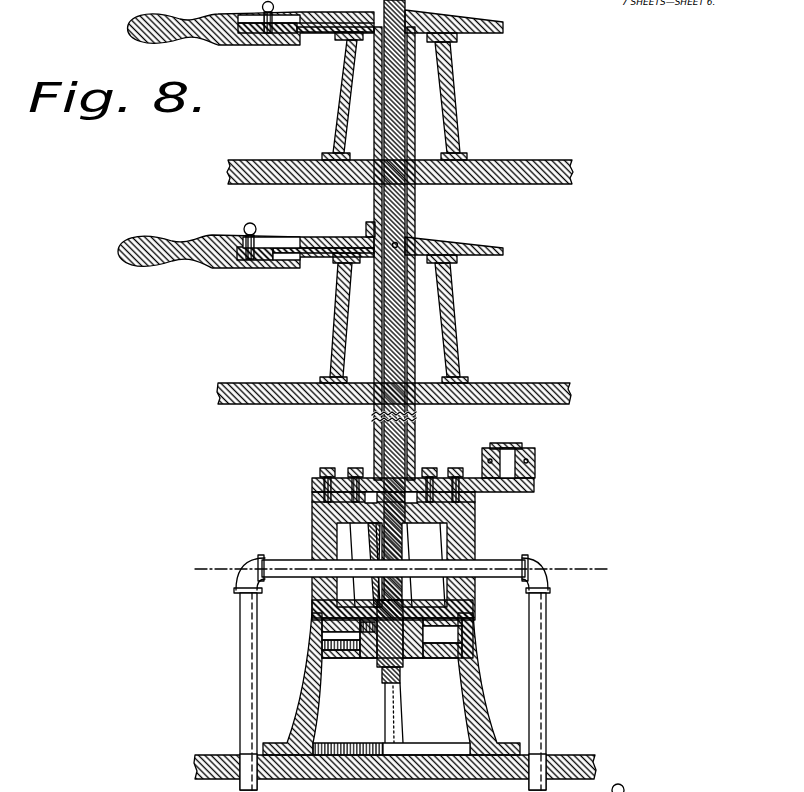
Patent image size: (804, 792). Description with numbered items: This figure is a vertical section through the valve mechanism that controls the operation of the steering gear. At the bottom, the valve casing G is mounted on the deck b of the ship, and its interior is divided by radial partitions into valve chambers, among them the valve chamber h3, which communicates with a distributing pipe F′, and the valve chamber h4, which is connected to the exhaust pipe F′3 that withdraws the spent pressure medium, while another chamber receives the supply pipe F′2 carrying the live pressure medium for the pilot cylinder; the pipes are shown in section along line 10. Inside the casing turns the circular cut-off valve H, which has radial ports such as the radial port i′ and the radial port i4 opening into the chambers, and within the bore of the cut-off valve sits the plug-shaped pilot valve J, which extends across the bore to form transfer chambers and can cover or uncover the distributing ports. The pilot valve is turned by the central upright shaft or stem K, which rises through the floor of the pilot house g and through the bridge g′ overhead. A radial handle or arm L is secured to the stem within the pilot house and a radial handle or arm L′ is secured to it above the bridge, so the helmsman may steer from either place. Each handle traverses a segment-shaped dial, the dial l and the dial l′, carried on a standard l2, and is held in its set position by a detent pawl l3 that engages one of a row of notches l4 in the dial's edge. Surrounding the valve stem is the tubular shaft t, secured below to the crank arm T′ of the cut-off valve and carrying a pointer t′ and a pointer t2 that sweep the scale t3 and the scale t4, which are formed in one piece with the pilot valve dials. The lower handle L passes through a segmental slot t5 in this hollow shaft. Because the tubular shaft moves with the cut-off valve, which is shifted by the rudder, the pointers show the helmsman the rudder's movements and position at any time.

The radial handle or arm L′ is at (143, 42).
The radial handle or arm L is at (138, 240).
The dial l is at (305, 258).
The dial l′ is at (304, 34).
The standard l2 is at (344, 108).
The catch or detent pawl l3 is at (298, 36).
The notches l4 is at (310, 40).
The tubular shaft t is at (380, 415).
The pointer t′ is at (437, 241).
The pointer t2 is at (428, 43).
The dial or scale t3 is at (500, 252).
The dial or scale t4 is at (492, 34).
The segmental slot t5 is at (366, 228).
The pilot house g is at (394, 374).
The bridge g′ is at (400, 155).
The central upright shaft or stem K is at (407, 418).
The circular cut-off valve H is at (360, 515).
The valve casing G is at (317, 532).
The valve chamber h3 is at (347, 597).
The valve chamber h4 is at (476, 525).
The radial port i′ is at (365, 565).
The radial port i4 is at (426, 565).
The guide block T′ is at (535, 480).
The pipe 10 is at (515, 558).
The supply pipe F′2 is at (242, 687).
The exhaust pipe F′3 is at (537, 713).
The plug-shaped pilot valve J is at (378, 660).
The deck b is at (384, 769).
The distributing pipe F′ is at (632, 782).